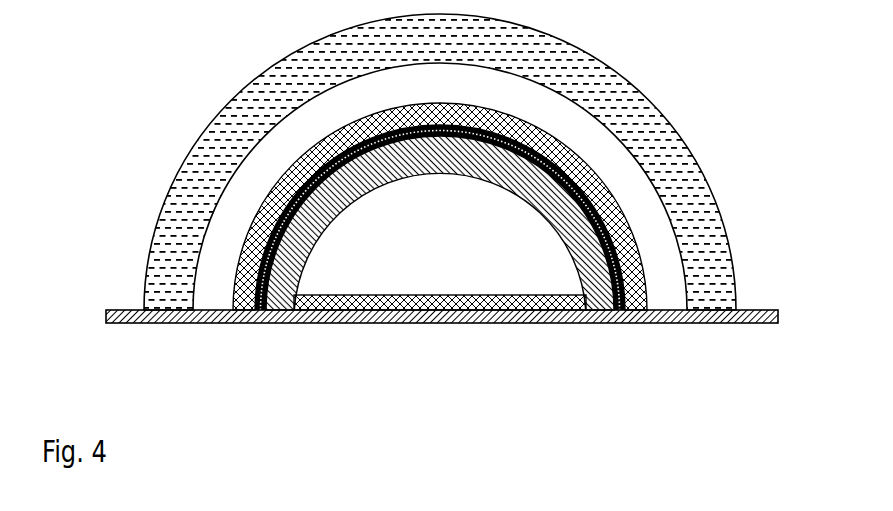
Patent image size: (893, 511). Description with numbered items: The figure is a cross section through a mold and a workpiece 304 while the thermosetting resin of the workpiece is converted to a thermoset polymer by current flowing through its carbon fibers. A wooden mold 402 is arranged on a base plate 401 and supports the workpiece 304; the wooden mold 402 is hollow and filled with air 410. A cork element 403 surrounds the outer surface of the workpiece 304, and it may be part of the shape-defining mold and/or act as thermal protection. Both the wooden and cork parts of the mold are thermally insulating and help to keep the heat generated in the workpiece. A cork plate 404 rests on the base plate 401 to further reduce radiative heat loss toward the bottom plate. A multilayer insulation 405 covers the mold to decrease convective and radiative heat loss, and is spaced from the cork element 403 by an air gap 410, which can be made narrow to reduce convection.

The workpiece 304 is at (257, 324).
The base plate 401 is at (380, 324).
The wooden mold 402 is at (600, 302).
The cork element 403 is at (633, 324).
The cork plate 404 is at (475, 307).
The multilayer insulation 405 is at (713, 324).
The air gap 410 is at (522, 238).